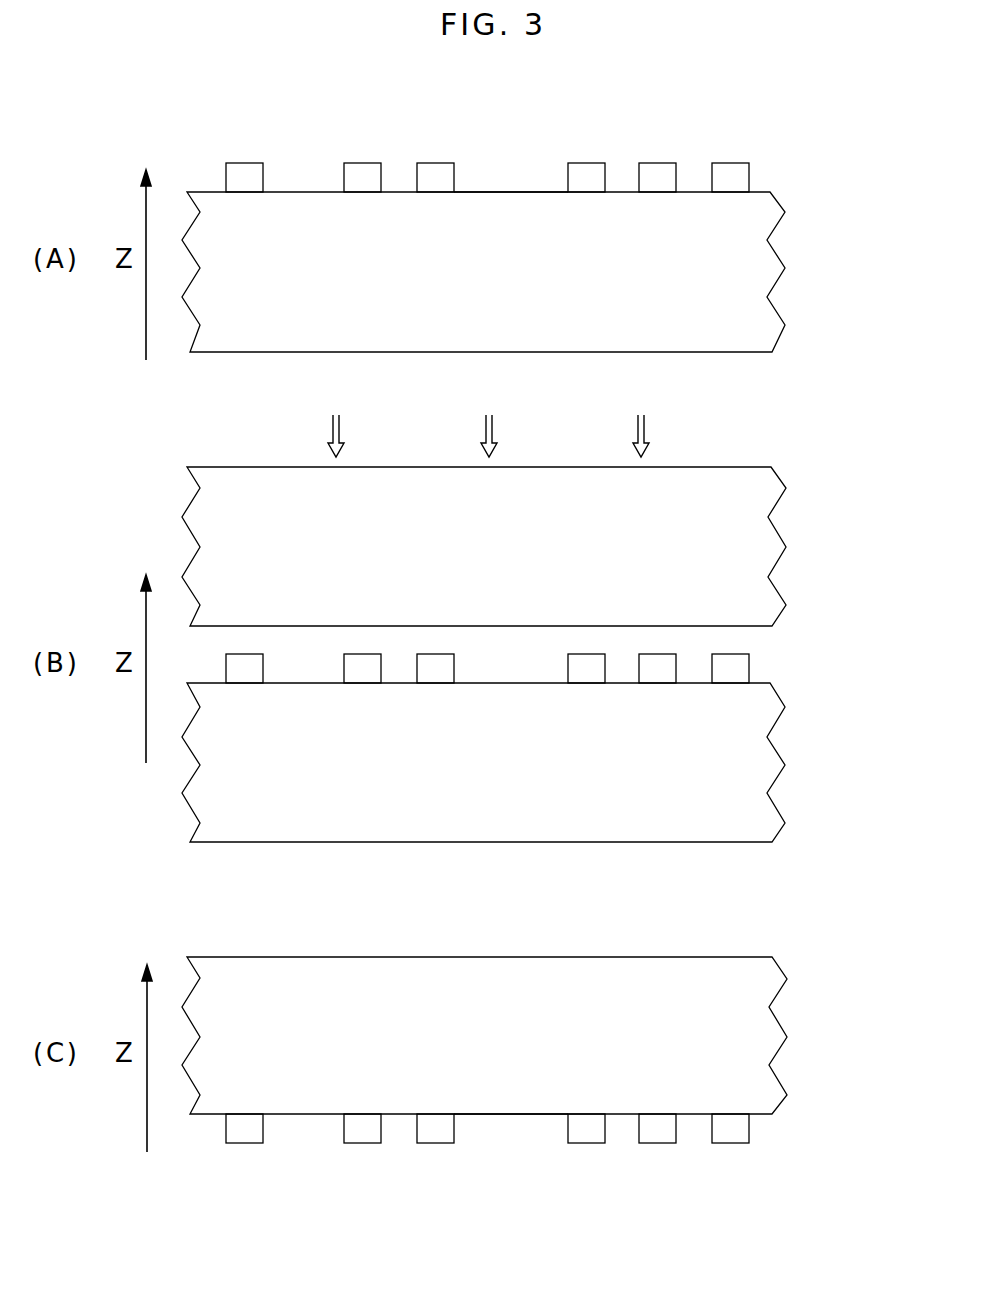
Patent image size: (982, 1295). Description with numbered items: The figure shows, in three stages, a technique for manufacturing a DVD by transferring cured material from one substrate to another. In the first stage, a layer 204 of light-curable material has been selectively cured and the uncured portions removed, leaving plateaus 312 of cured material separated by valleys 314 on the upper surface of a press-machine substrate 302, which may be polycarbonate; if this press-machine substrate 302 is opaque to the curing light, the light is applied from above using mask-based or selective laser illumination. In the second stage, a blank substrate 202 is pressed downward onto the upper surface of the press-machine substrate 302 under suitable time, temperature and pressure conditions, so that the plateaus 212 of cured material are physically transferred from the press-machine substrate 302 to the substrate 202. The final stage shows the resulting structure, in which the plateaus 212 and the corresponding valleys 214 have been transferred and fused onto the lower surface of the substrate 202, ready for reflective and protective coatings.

The substrate 202 is at (789, 554).
The layer of uncured light-curable material 204 is at (552, 654).
The plateaus of cured material 212 is at (437, 1150).
The valleys 214 is at (508, 1121).
The press-machine substrate 302 is at (789, 277).
The plateaus of cured material 312 is at (435, 158).
The valleys 314 is at (506, 183).